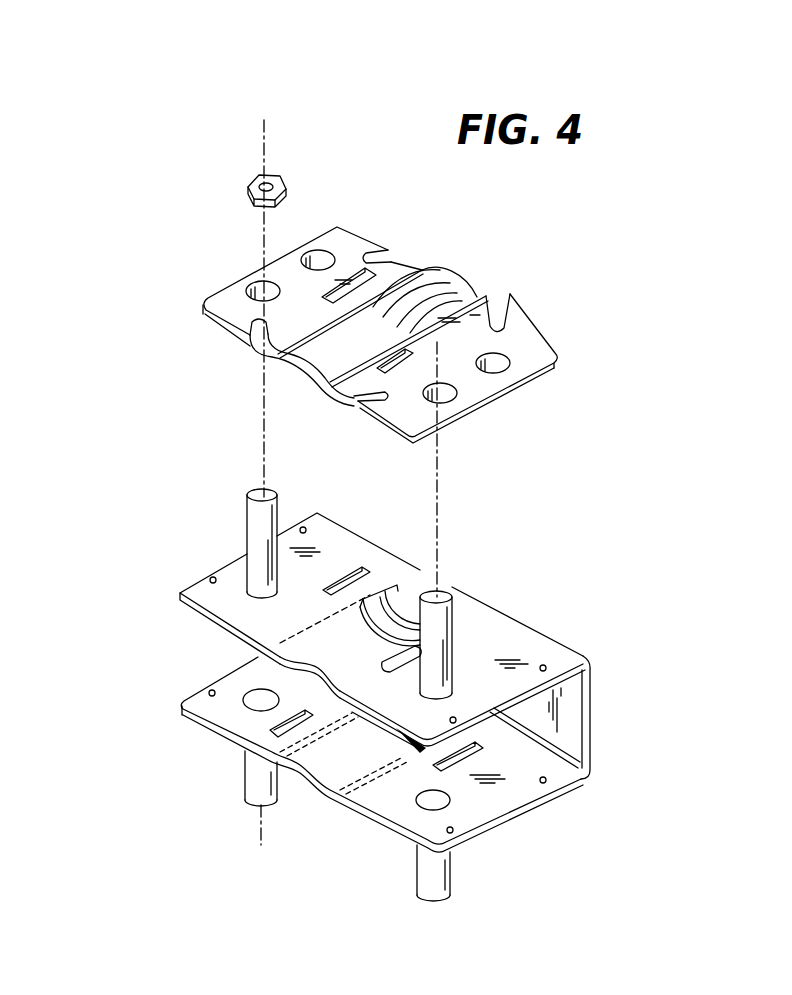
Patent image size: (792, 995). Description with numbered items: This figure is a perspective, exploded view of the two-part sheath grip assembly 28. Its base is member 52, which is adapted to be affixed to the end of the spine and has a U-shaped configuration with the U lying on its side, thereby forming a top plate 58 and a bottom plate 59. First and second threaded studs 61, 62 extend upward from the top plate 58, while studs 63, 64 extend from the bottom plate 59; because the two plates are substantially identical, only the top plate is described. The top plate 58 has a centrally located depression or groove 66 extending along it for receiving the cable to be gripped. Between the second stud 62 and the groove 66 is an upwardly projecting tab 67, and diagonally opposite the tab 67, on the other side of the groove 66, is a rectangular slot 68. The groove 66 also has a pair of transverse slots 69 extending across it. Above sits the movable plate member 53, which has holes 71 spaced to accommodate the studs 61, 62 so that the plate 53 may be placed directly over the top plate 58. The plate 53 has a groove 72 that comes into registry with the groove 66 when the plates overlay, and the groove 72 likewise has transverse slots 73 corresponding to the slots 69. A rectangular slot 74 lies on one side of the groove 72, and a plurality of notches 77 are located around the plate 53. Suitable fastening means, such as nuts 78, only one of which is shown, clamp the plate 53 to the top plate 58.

The sheath grip assembly 28 is at (655, 317).
The member 52 is at (550, 640).
The movable plate member 53 is at (204, 316).
The top plate 58 is at (190, 585).
The bottom plate 59 is at (192, 692).
The first threaded stud 61 is at (250, 518).
The second threaded stud 62 is at (452, 606).
The stud 63 is at (245, 784).
The stud 64 is at (456, 882).
The groove 66 is at (246, 630).
The tab 67 is at (378, 660).
The rectangular slot 68 is at (351, 557).
The transverse slots 69 is at (388, 595).
The holes 71 is at (318, 258).
The groove 72 is at (307, 372).
The transverse slots 73 is at (471, 274).
The rectangular slot 74 is at (352, 272).
The notches 77 is at (394, 253).
The nuts 78 is at (248, 184).